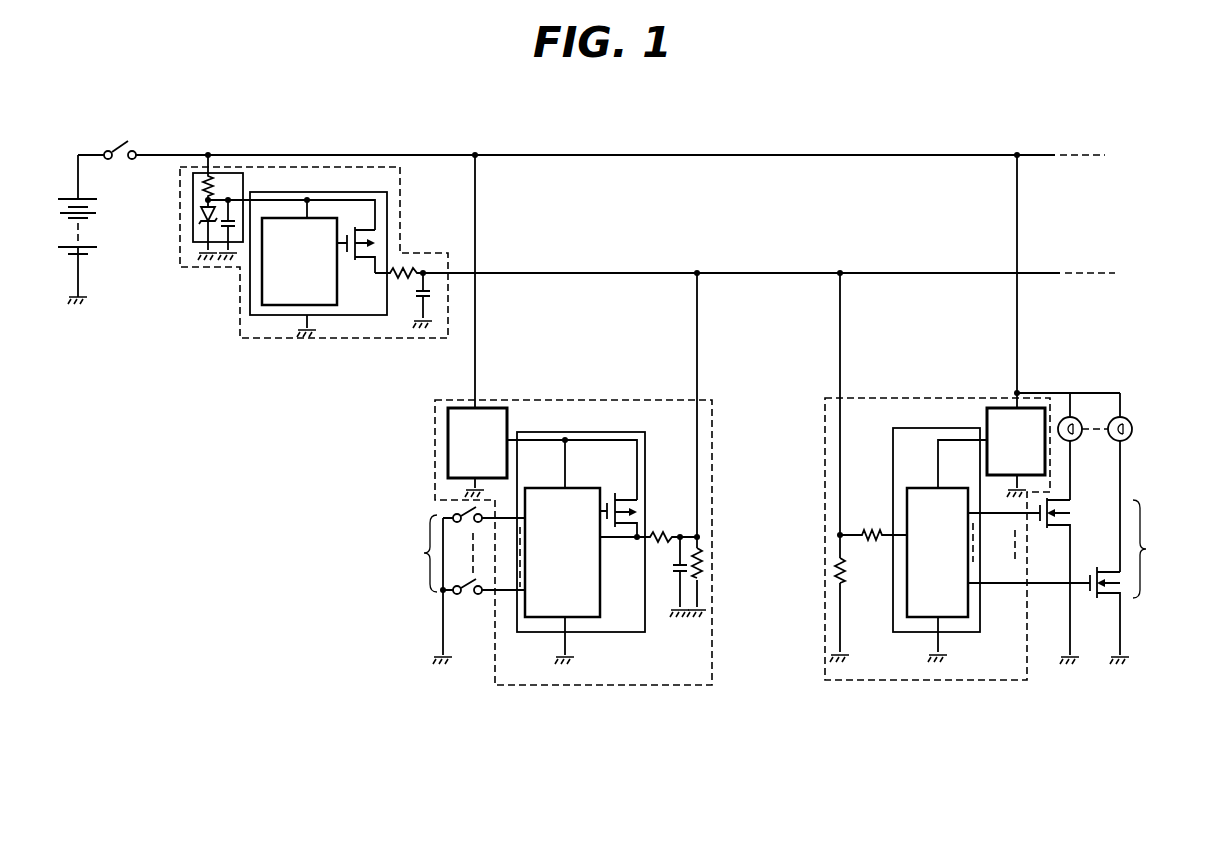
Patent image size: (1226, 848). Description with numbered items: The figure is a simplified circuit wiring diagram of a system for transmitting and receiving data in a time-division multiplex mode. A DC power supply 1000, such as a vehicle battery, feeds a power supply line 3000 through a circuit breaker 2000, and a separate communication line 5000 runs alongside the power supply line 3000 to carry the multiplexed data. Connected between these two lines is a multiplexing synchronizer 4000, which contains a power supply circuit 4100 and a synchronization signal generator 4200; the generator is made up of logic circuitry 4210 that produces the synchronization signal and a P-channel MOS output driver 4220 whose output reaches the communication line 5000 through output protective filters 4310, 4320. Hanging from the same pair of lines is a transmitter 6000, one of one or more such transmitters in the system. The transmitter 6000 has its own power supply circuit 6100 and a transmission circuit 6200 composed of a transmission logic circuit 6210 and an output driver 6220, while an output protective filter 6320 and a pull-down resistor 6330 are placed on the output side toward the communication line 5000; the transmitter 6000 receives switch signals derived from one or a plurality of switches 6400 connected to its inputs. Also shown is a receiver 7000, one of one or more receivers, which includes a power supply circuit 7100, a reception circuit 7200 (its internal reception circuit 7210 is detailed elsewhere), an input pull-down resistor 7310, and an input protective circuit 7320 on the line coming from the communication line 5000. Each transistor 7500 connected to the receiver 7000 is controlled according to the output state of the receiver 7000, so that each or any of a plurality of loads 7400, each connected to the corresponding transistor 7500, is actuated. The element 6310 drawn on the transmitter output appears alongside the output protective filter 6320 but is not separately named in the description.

The DC power supply 1000 is at (88, 208).
The circuit breaker 2000 is at (133, 131).
The power supply line 3000 is at (575, 131).
The multiplexing synchronizer 4000 is at (300, 340).
The power supply circuit 4100 is at (193, 215).
The synchronization signal generator 4200 is at (250, 276).
The logic circuitry 4210 is at (262, 290).
The P-channel MOS output driver 4220 is at (380, 238).
The output protective filter 4310 is at (403, 272).
The output protective filter 4320 is at (416, 303).
The communication line 5000 is at (590, 250).
The transmitter 6000 is at (520, 388).
The power supply circuit 6100 is at (448, 462).
The transmission circuit 6200 is at (586, 431).
The transmission logic circuit 6210 is at (585, 617).
The output driver 6220 is at (640, 503).
The resistor 6310 is at (668, 537).
The output protective filter 6320 is at (678, 575).
The pull-down resistor 6330 is at (699, 565).
The switches 6400 is at (424, 584).
The receiver 7000 is at (880, 395).
The power supply circuit 7100 is at (992, 407).
The reception circuit 7200 is at (978, 430).
The reception circuit 7210 is at (958, 617).
The input pull-down resistor 7310 is at (838, 572).
The input protective circuit 7320 is at (865, 540).
The loads 7400 is at (1125, 385).
The transistor 7500 is at (1090, 581).